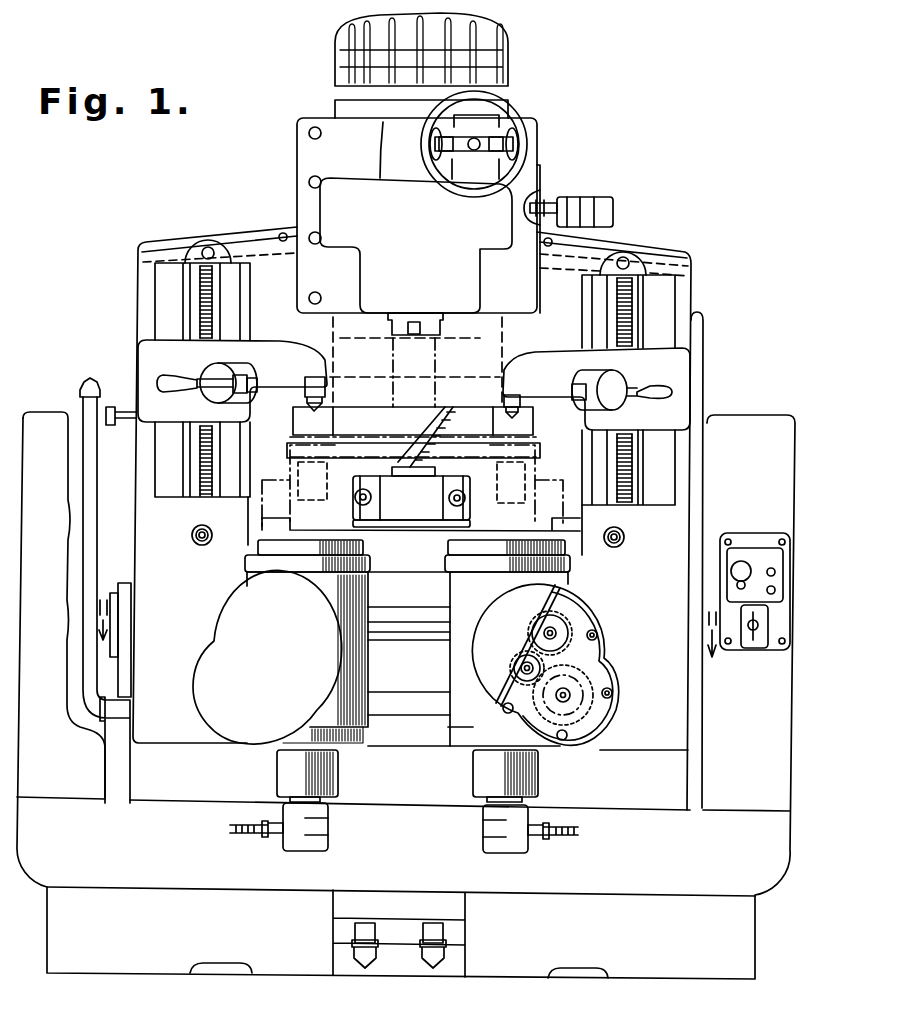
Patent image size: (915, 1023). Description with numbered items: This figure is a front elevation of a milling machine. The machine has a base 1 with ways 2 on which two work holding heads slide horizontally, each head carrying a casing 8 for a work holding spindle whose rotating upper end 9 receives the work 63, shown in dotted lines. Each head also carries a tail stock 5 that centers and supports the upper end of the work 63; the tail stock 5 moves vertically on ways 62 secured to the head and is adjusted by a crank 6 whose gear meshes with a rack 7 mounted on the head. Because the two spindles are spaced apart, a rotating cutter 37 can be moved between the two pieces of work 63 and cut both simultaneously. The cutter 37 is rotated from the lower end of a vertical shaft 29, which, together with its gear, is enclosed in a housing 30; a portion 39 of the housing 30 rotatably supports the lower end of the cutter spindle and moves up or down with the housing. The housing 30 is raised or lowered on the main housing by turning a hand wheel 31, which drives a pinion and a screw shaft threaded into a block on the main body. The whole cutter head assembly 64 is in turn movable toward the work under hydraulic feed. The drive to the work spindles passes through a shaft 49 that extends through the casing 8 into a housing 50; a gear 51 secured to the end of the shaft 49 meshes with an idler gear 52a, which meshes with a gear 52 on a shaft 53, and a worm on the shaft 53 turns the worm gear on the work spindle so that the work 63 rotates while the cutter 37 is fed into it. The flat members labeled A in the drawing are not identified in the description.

The base 1 is at (744, 912).
The ways 2 is at (396, 590).
The tail stock 5 is at (328, 376).
The crank 6 is at (195, 398).
The rack 7 is at (200, 302).
The casing 8 is at (457, 647).
The rotating upper ends 9 is at (460, 547).
The vertical shaft 29 is at (390, 322).
The housing 30 is at (373, 268).
The hand wheel 31 is at (520, 104).
The rotating cutter 37 is at (435, 408).
The portion of the housing 39 is at (411, 497).
The shaft 49 is at (556, 631).
The housing 50 is at (587, 594).
The gear 51 is at (603, 643).
The gear 52 is at (578, 681).
The idler gear 52a is at (516, 670).
The shaft 53 is at (565, 699).
The ways 62 is at (152, 282).
The work 63 is at (340, 401).
The cutter head assembly 64 is at (307, 145).
The side plates A is at (674, 593).